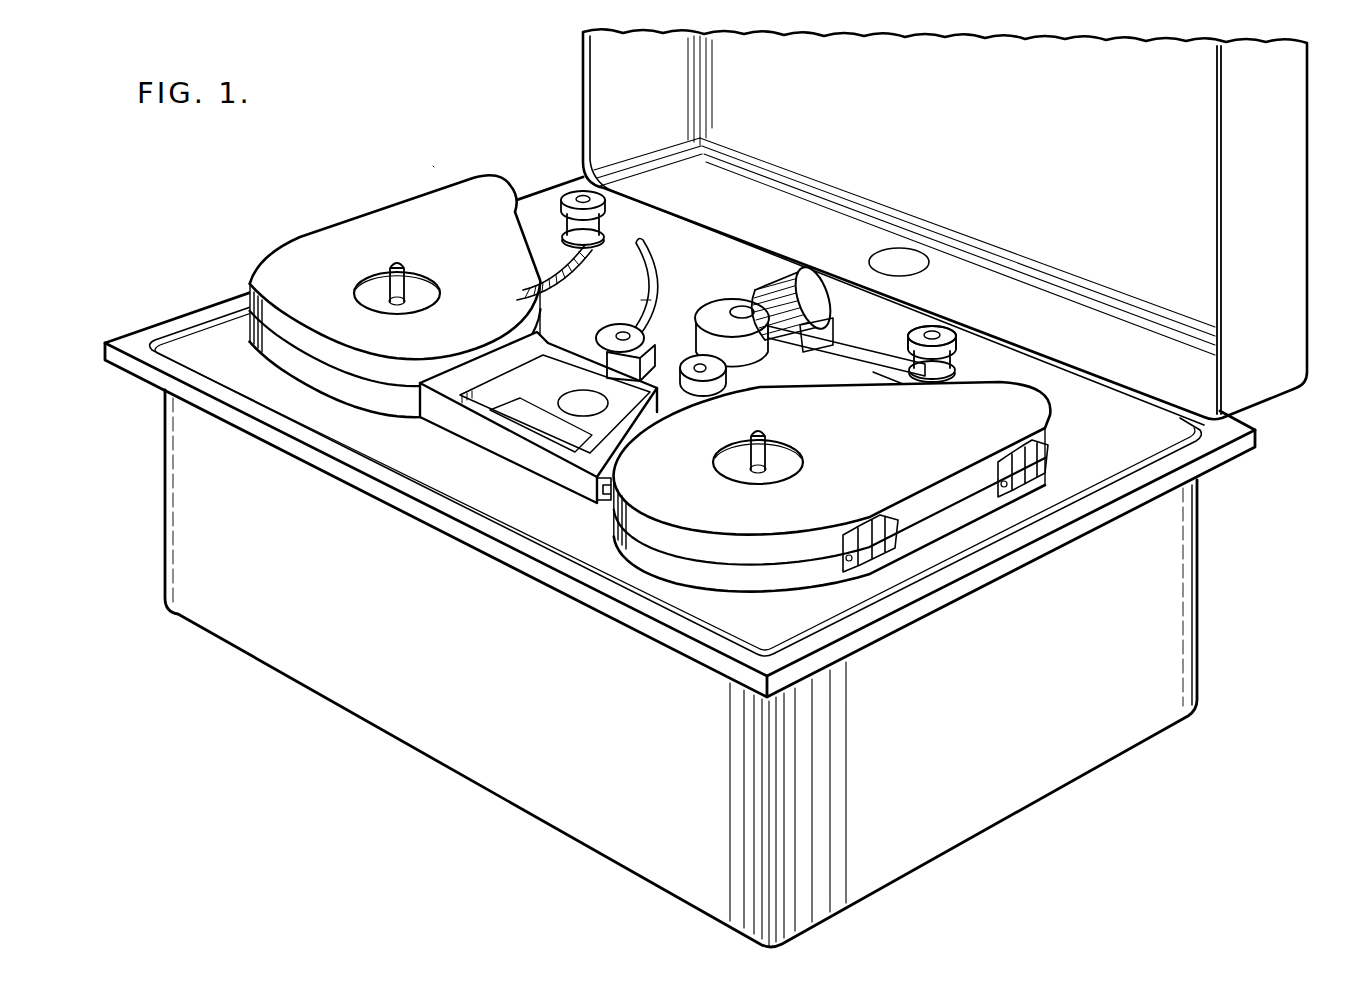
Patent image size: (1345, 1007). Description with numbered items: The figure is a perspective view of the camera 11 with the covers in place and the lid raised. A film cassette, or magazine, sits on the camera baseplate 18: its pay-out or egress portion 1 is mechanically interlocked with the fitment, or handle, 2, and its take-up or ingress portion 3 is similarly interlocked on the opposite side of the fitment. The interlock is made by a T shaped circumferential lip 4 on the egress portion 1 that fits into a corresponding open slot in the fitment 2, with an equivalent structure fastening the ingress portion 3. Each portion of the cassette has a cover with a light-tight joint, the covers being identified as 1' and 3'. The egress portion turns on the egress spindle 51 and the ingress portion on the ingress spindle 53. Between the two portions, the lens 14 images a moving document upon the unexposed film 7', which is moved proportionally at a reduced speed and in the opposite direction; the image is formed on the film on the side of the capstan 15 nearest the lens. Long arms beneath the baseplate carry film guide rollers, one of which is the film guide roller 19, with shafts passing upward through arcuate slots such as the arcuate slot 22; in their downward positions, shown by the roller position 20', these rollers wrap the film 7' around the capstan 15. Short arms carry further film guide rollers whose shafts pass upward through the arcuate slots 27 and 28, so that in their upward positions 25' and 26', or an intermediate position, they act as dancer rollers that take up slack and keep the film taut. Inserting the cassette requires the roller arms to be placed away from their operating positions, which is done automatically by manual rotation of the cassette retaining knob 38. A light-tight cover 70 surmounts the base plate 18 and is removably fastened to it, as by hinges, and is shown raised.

The pay-out or egress portion of the film cassette 1 is at (832, 489).
The cover of the egress portion 1' is at (832, 477).
The fitment or handle 2 is at (556, 404).
The take-up or ingress portion of the cassette 3 is at (395, 301).
The cover of the ingress portion 3' is at (395, 267).
The T shaped circumferential lip 4 is at (606, 501).
The unexposed film 7' is at (871, 364).
The camera 11 is at (431, 164).
The lens 14 is at (756, 298).
The capstan 15 is at (732, 333).
The camera baseplate 18 is at (1112, 451).
The film guide roller 19 is at (717, 366).
The film guide roller in downward position 20' is at (605, 346).
The arcuate slot 22 is at (652, 270).
The dancer roller in upward position 25' is at (903, 329).
The dancer roller in upward position 26' is at (608, 219).
The arcuate slot 27 is at (913, 378).
The arcuate slot 28 is at (576, 258).
The cassette retaining knob 38 is at (667, 306).
The egress spindle 51 is at (757, 430).
The ingress spindle 53 is at (402, 262).
The light-tight cover 70 is at (1048, 193).